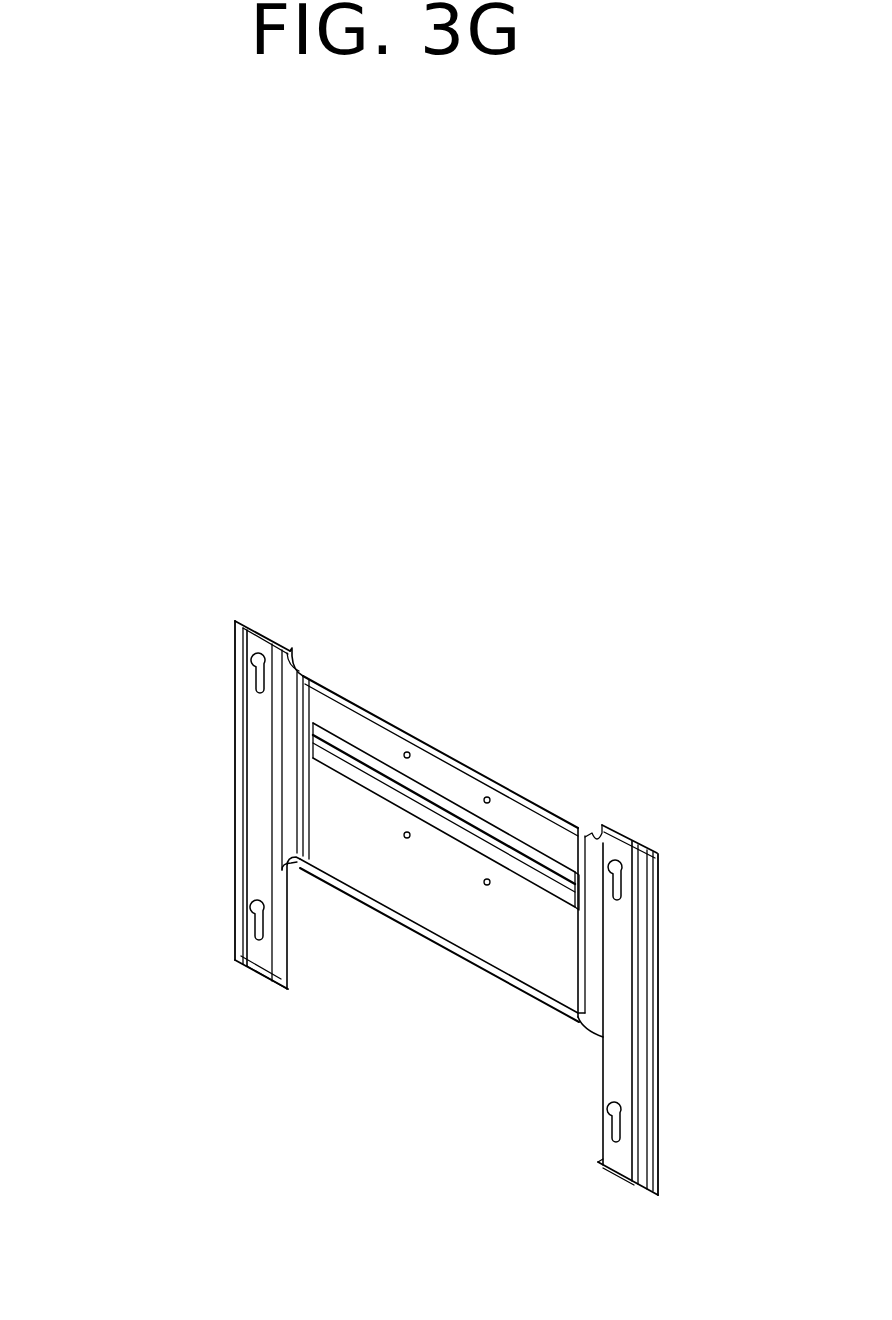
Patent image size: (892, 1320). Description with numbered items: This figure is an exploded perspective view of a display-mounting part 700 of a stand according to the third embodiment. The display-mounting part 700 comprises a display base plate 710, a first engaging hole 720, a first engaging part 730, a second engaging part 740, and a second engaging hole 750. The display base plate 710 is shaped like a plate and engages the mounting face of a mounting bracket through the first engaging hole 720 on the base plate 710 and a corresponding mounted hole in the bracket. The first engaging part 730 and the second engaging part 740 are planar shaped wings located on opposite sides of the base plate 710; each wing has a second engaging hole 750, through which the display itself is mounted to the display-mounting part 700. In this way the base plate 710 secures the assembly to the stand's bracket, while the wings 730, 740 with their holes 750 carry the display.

The display-mounting part 700 is at (147, 582).
The display base plate 710 is at (375, 733).
The first engaging hole 720 is at (502, 783).
The first engaging part 730 is at (262, 809).
The second engaging part 740 is at (673, 1058).
The second engaging hole 750 is at (247, 917).